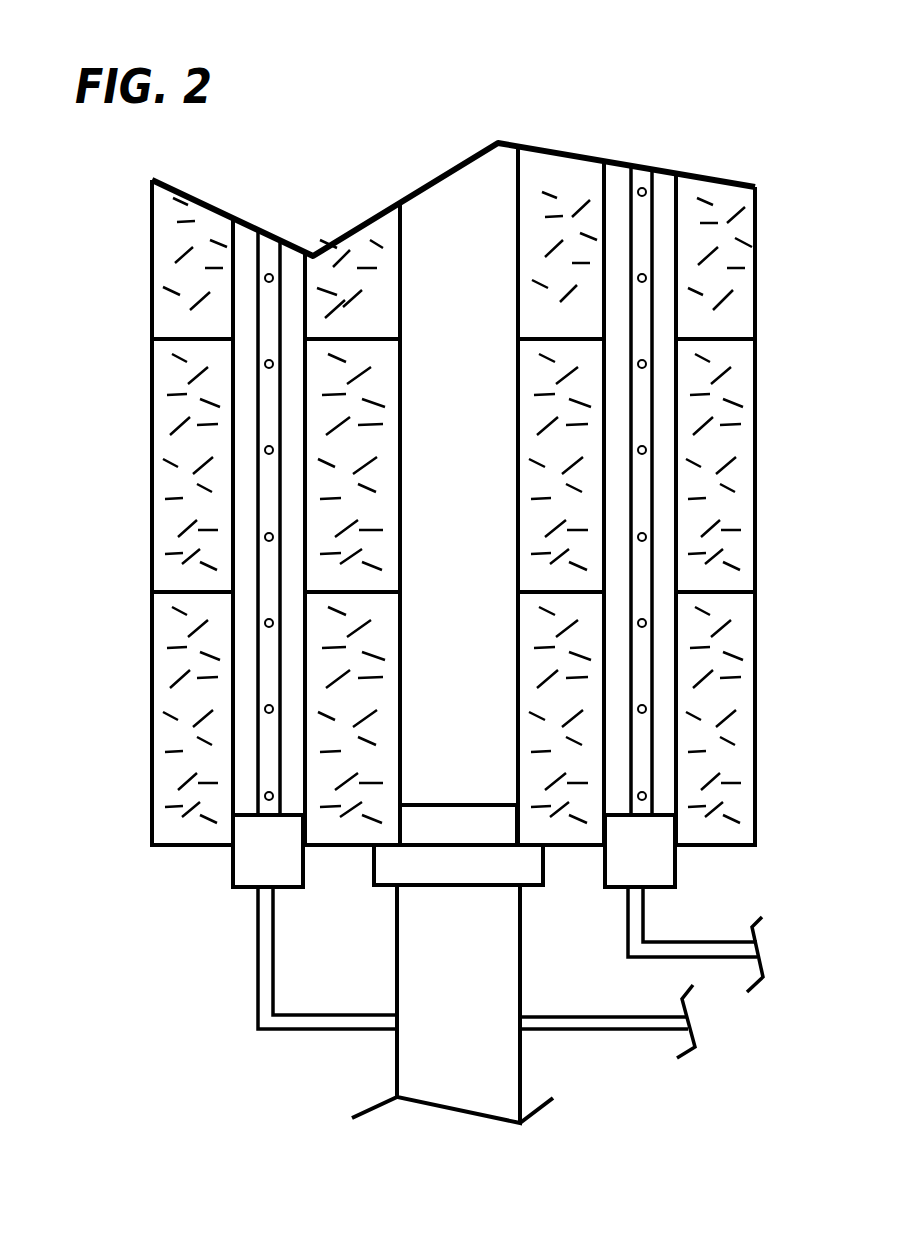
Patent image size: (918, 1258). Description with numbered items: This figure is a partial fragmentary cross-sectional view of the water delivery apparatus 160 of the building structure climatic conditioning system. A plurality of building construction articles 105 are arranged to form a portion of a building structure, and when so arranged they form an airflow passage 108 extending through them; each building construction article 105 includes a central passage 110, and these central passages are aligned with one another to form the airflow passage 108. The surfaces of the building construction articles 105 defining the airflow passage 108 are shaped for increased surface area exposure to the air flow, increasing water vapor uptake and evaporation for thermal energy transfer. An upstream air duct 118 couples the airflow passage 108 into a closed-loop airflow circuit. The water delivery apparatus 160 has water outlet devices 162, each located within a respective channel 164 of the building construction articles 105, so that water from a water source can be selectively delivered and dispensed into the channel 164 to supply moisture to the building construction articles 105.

The building construction articles 105 is at (757, 255).
The airflow passage 108 is at (483, 200).
The central passage 110 is at (400, 702).
The upstream air duct 118 is at (402, 1064).
The water delivery apparatus 160 is at (257, 994).
The water outlet devices 162 is at (268, 310).
The channel 164 is at (233, 260).